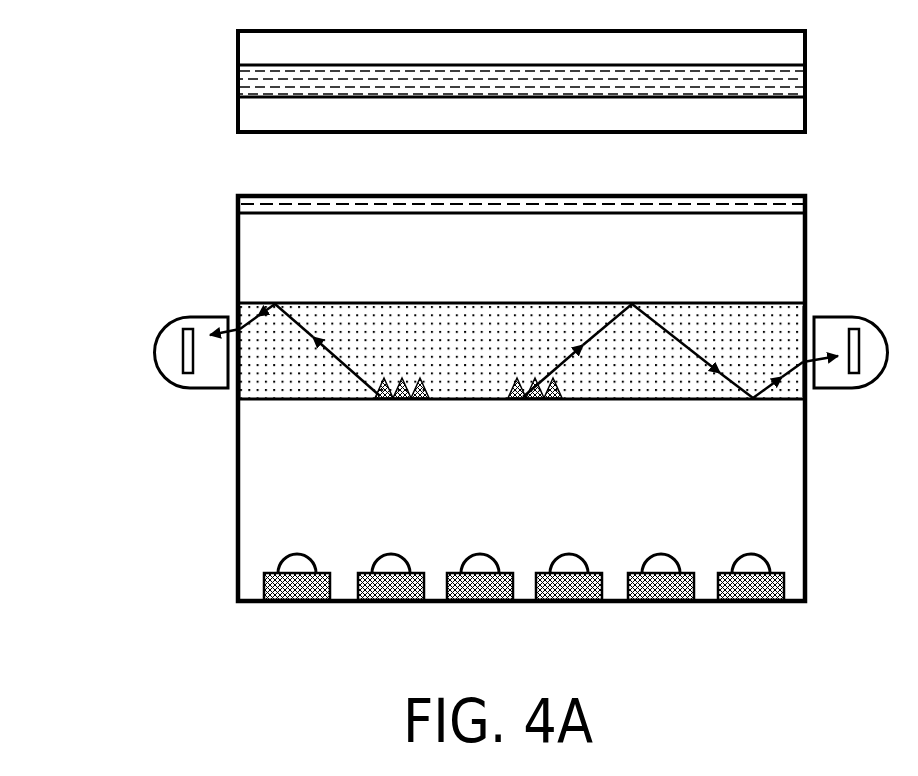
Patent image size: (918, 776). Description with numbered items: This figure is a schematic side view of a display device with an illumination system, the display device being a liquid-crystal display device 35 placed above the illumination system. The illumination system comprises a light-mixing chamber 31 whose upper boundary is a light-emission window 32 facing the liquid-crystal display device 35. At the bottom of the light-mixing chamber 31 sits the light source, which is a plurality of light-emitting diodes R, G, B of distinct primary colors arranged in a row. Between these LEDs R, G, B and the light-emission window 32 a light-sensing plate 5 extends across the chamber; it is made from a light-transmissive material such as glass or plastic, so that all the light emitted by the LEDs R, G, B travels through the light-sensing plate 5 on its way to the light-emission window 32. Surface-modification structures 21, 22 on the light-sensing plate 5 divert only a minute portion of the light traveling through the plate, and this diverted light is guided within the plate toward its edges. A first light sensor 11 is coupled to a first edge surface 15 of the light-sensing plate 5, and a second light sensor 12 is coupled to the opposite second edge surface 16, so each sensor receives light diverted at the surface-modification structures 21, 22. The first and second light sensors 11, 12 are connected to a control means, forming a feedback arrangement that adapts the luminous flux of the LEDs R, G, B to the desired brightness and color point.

The liquid-crystal display device 35 is at (213, 92).
The light-mixing chamber 31 is at (99, 310).
The light-emission window 32 is at (776, 203).
The light-sensing plate 5 is at (697, 318).
The second edge surface 16 is at (242, 378).
The first edge surface 15 is at (802, 392).
The surface-modification structure 21 is at (392, 373).
The surface-modification structure 22 is at (526, 373).
The second light sensor 12 is at (192, 374).
The first light sensor 11 is at (853, 374).
The red light-emitting diode R is at (296, 560).
The green light-emitting diode G is at (391, 560).
The blue light-emitting diode B is at (479, 560).